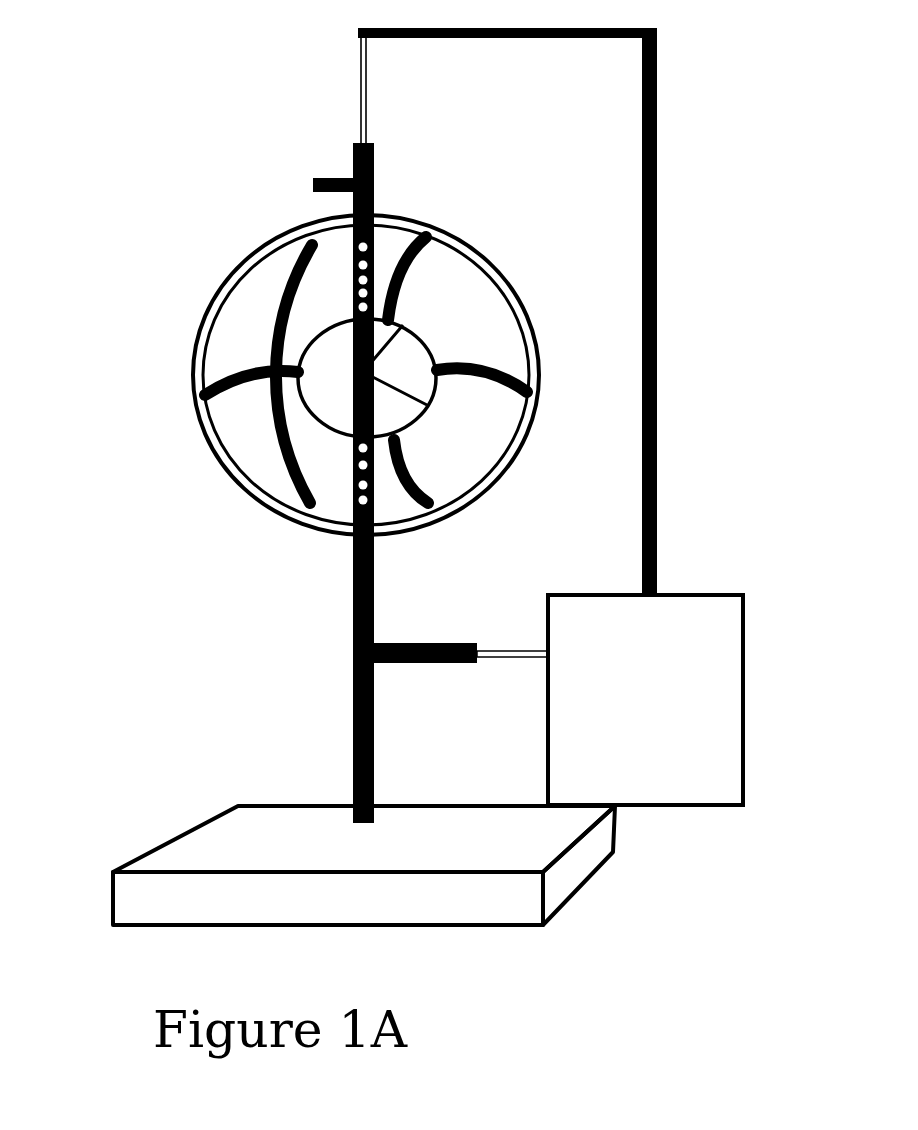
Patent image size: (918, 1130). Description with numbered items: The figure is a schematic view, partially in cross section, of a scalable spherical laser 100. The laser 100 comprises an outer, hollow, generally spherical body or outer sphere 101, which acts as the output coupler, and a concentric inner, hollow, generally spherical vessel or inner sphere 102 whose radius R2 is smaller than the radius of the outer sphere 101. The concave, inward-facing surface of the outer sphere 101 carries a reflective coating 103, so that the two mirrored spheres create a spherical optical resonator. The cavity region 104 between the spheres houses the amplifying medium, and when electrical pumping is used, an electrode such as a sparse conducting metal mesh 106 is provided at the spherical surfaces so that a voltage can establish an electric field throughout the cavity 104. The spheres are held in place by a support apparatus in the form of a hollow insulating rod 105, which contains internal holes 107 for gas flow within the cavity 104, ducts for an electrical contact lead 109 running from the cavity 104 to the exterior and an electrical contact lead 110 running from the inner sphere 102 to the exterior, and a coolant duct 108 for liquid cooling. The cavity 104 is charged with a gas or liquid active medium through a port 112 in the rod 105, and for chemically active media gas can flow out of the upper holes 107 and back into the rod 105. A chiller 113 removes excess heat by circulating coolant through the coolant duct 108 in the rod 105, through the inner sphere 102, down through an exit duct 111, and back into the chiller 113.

The scalable spherical laser 100 is at (843, 212).
The outer sphere 101 is at (467, 250).
The inner sphere 102 is at (425, 343).
The reflective coating 103 is at (595, 377).
The cavity region 104 is at (455, 415).
The hollow insulating rod 105 is at (353, 645).
The sparse conducting metal mesh 106 is at (380, 463).
The internal holes 107 is at (353, 505).
The coolant duct 108 is at (358, 47).
The electrical contact lead 109 is at (338, 353).
The electrical contact lead 110 is at (307, 240).
The exit duct 111 is at (517, 652).
The port 112 is at (313, 187).
The chiller 113 is at (548, 738).
The radius of the inner sphere R2 is at (403, 326).